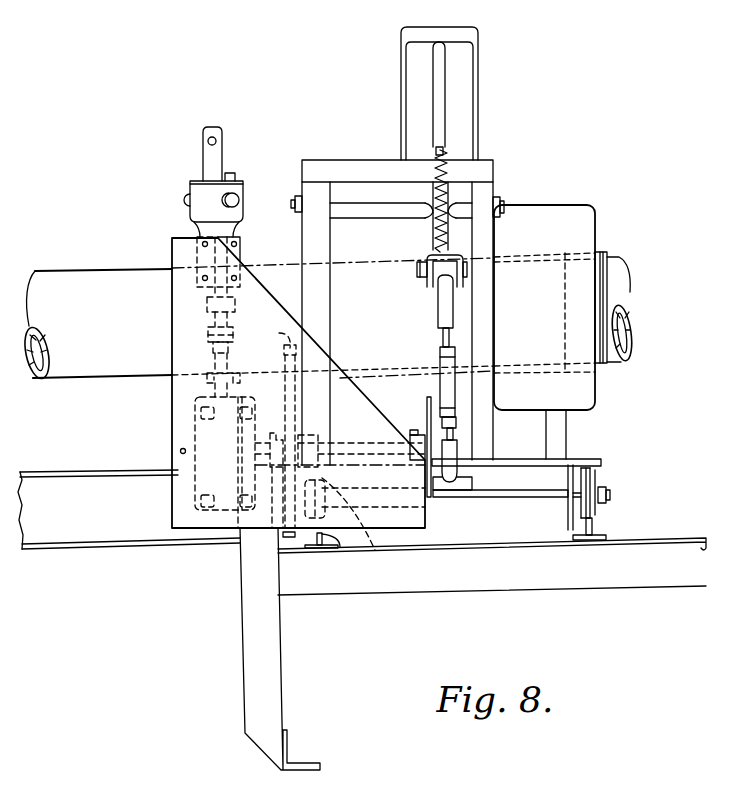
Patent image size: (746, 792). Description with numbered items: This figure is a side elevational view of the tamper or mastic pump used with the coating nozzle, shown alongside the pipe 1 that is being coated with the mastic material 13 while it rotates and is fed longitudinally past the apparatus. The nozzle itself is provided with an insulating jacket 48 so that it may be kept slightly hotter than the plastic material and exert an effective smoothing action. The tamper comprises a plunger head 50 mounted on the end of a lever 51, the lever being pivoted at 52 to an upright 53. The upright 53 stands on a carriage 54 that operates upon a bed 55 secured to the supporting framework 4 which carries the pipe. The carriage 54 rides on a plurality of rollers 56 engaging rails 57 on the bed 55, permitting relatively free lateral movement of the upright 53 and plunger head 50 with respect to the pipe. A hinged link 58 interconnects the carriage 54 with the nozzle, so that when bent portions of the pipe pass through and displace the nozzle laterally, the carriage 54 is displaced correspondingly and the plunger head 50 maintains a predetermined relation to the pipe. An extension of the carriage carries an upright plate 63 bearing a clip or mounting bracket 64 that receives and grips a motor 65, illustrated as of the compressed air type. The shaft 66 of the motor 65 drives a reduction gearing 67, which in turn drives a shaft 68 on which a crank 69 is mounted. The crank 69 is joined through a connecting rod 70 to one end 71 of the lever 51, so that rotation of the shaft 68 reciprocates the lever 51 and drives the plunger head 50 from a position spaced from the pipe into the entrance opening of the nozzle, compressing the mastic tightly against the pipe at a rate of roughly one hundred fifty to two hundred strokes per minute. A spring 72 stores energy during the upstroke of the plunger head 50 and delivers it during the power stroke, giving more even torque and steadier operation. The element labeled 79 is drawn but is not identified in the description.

The pipe 1 is at (625, 263).
The supporting framework 4 is at (268, 669).
The mastic material 13 is at (524, 368).
The insulating jacket 48 is at (578, 395).
The plunger head 50 is at (490, 80).
The lever 51 is at (442, 120).
The pivot 52 is at (358, 203).
The upright 53 is at (322, 310).
The carriage 54 is at (592, 460).
The bed 55 is at (605, 541).
The rollers 56 is at (636, 466).
The rails 57 is at (321, 541).
The hinged link 58 is at (562, 441).
The upright plate 63 is at (218, 527).
The mounting bracket 64 is at (242, 252).
The motor 65 is at (244, 186).
The shaft 66 is at (213, 362).
The reduction gearing 67 is at (205, 431).
The shaft 68 is at (343, 443).
The crank 69 is at (438, 488).
The connecting rod 70 is at (452, 314).
The end of lever 71 is at (426, 272).
The spring 72 is at (448, 193).
The rod 79 is at (273, 425).